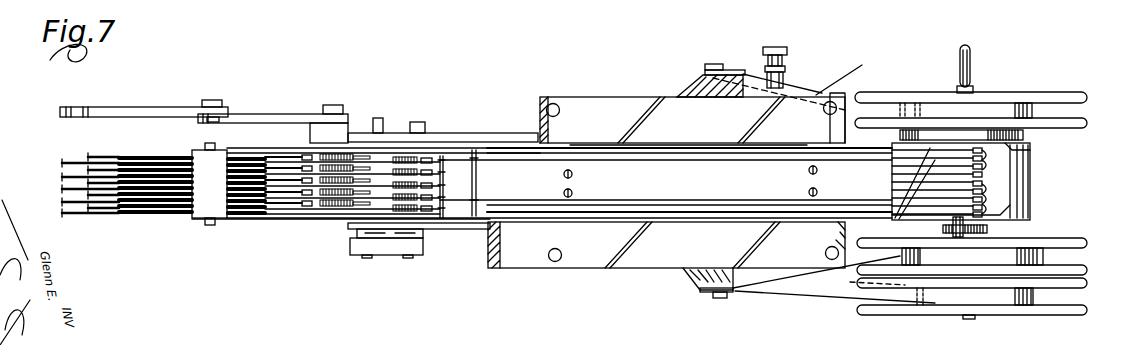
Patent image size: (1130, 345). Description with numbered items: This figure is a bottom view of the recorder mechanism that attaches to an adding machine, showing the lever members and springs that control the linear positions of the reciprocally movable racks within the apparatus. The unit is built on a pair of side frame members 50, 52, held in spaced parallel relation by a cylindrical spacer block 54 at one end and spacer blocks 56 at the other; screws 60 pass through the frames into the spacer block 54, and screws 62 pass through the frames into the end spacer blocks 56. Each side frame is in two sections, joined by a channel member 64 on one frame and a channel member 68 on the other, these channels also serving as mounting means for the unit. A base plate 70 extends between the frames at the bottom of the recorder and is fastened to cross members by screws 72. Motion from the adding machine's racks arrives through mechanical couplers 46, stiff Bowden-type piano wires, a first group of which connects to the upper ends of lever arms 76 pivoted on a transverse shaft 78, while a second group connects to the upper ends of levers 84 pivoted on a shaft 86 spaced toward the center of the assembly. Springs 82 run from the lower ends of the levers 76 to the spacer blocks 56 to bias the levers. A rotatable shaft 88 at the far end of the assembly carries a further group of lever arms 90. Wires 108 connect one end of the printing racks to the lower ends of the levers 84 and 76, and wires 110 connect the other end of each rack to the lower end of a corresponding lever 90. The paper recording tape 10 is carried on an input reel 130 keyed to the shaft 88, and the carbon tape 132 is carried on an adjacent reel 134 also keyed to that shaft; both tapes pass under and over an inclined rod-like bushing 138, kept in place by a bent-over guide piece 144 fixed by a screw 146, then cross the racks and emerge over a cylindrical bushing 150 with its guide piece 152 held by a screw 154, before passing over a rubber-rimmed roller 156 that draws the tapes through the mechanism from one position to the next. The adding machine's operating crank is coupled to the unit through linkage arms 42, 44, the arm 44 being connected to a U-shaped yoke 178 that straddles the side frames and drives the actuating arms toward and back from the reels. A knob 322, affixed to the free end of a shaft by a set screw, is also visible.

The paper recording tape 10 is at (820, 300).
The linkage arm 42 is at (170, 108).
The linkage arm 44 is at (300, 115).
The mechanical couplers 46 is at (142, 229).
The side frame member 50 is at (1014, 149).
The side frame member 52 is at (1000, 214).
The cylindrical spacer block 54 is at (1028, 175).
The spacer block 56 is at (210, 202).
The screws 60 is at (1025, 138).
The screws 62 is at (208, 143).
The channel member 64 is at (613, 96).
The channel member 68 is at (645, 253).
The base plate 70 is at (714, 183).
The screws 72 is at (573, 176).
The lever arms 76 is at (303, 167).
The shaft 78 is at (357, 238).
The springs 82 is at (402, 168).
The levers 84 is at (427, 158).
The shaft 86 is at (443, 160).
The rotatable shaft 88 is at (971, 58).
The lever arms 90 is at (984, 155).
The wires 108 is at (477, 151).
The wires 110 is at (896, 219).
The input reel 130 is at (1082, 313).
The carbon tape 132 is at (778, 281).
The reel 134 is at (1050, 238).
The rod-like bushing 138 is at (1066, 93).
The bent-over guide piece 144 is at (700, 285).
The screw 146 is at (722, 300).
The cylindrical bushing 150 is at (678, 86).
The guide piece 152 is at (746, 71).
The screw 154 is at (716, 64).
The roller 156 is at (788, 75).
The U-shaped yoke 178 is at (377, 240).
The knob 322 is at (787, 50).